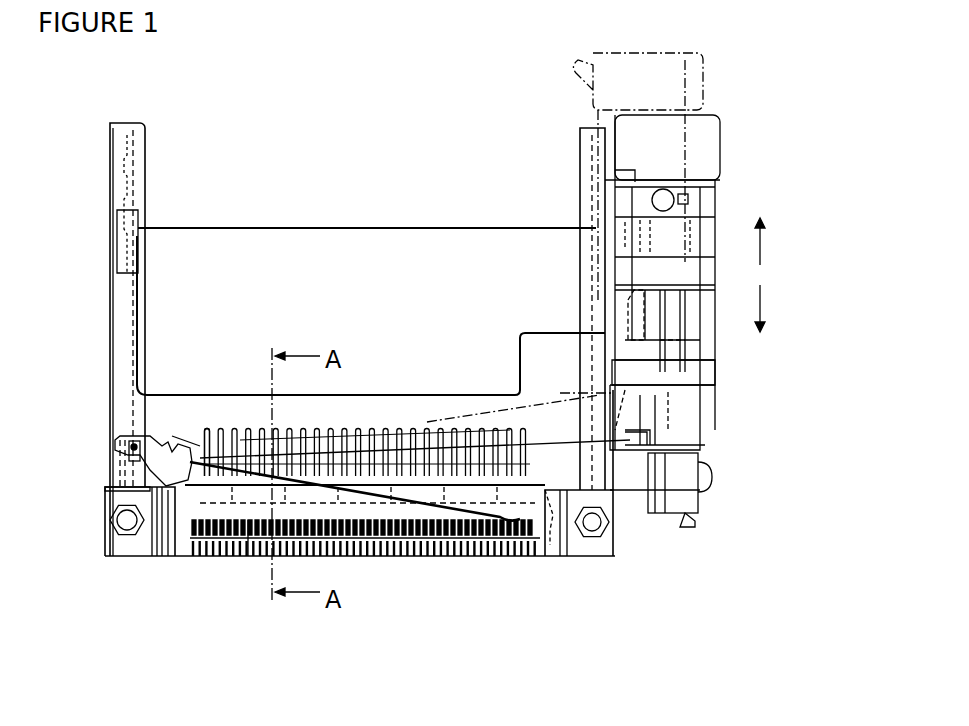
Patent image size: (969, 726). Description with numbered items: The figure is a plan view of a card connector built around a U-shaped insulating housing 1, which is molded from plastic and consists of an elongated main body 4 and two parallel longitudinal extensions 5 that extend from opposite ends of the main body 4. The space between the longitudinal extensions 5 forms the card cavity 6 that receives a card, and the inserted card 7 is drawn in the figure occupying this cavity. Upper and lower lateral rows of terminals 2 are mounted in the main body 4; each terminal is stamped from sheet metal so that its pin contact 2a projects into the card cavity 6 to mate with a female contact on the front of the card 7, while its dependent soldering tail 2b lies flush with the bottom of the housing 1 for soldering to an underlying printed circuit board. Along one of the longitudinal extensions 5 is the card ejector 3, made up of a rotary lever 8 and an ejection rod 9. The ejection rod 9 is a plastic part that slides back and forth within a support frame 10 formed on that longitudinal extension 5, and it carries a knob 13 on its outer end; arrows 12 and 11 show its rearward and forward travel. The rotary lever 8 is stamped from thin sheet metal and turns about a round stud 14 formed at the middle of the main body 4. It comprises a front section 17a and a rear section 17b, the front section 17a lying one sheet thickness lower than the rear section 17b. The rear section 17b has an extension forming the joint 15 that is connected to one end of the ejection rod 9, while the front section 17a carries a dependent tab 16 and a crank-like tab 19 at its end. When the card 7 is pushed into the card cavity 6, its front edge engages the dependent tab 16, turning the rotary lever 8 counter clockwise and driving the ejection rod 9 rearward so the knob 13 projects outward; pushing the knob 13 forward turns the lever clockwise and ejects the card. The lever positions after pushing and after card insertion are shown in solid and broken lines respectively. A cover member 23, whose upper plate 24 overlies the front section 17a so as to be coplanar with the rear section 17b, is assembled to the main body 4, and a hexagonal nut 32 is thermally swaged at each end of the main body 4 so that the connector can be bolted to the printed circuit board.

The insulating housing 1 is at (100, 376).
The terminals 2 is at (212, 420).
The pin contact 2a is at (224, 428).
The soldering tail 2b is at (237, 556).
The card ejector 3 is at (719, 451).
The main body 4 is at (165, 548).
The longitudinal extensions 5 is at (108, 181).
The card cavity 6 is at (456, 196).
The card 7 is at (220, 255).
The rotary lever 8 is at (546, 494).
The ejection rod 9 is at (702, 500).
The support frame 10 is at (695, 376).
The arrow 11 is at (764, 312).
The arrow 12 is at (764, 248).
The knob 13 is at (705, 152).
The round stud 14 is at (372, 560).
The joint 15 is at (670, 483).
The dependent tab 16 is at (177, 438).
The front section 17a is at (205, 445).
The rear section 17b is at (322, 432).
The crank-like tab 19 is at (133, 448).
The cover member 23 is at (420, 560).
The upper plate 24 is at (248, 556).
The hexagonal nut 32 is at (603, 550).